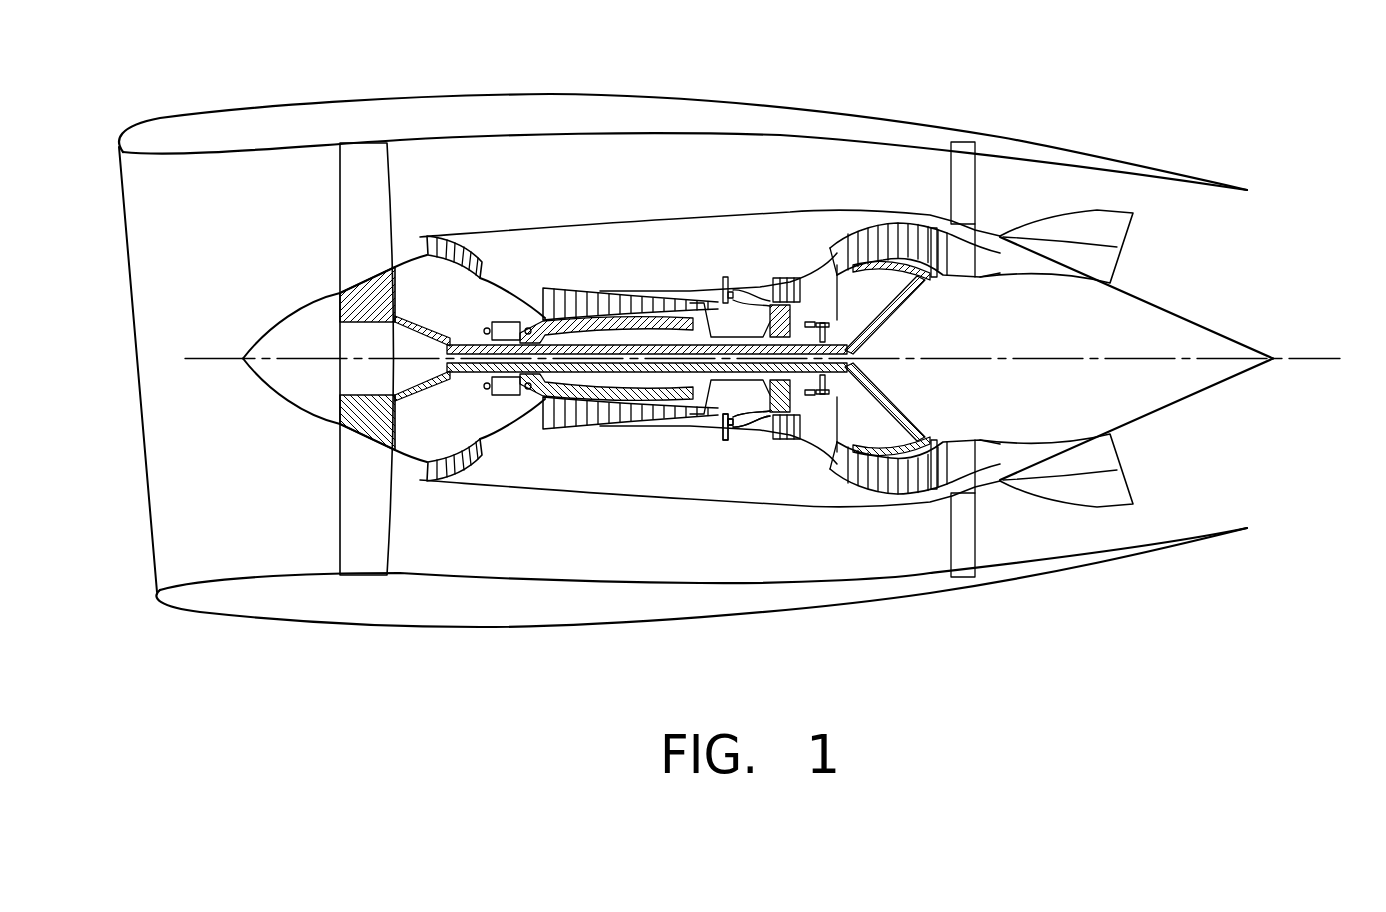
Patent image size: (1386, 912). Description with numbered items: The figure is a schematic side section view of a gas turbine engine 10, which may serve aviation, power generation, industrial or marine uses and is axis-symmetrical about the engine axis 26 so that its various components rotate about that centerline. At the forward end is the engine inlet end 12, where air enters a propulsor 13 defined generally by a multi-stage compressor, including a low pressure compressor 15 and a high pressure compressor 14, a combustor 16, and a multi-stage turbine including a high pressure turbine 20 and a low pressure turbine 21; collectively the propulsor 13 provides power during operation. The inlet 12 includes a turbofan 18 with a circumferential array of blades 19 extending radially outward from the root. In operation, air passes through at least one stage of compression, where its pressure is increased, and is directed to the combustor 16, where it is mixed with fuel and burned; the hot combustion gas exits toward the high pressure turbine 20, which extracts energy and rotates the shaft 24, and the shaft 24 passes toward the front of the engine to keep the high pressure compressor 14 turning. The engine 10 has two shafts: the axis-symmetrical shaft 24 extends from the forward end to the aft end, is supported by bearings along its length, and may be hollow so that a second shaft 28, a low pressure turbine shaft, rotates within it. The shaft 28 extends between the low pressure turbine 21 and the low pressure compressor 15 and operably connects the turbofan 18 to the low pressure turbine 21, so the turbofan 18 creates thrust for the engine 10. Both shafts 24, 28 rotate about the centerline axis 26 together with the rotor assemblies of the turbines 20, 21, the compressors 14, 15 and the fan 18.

The gas turbine engine 10 is at (995, 75).
The engine inlet end 12 is at (140, 190).
The propulsor 13 is at (683, 213).
The high pressure compressor 14 is at (577, 287).
The low pressure compressor 15 is at (452, 485).
The combustor 16 is at (747, 278).
The turbofan 18 is at (307, 203).
The blades 19 is at (367, 193).
The high pressure turbine 20 is at (797, 267).
The low pressure turbine 21 is at (930, 295).
The shaft 24 is at (718, 383).
The engine axis 26 is at (1335, 358).
The low pressure turbine shaft 28 is at (632, 378).